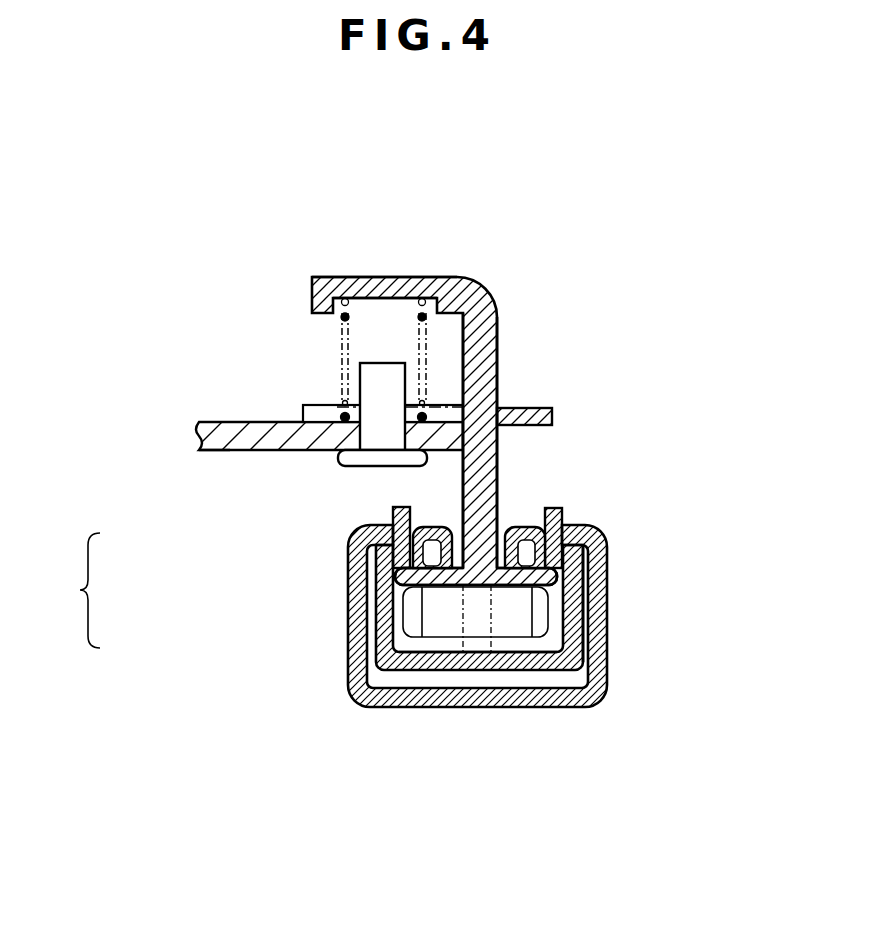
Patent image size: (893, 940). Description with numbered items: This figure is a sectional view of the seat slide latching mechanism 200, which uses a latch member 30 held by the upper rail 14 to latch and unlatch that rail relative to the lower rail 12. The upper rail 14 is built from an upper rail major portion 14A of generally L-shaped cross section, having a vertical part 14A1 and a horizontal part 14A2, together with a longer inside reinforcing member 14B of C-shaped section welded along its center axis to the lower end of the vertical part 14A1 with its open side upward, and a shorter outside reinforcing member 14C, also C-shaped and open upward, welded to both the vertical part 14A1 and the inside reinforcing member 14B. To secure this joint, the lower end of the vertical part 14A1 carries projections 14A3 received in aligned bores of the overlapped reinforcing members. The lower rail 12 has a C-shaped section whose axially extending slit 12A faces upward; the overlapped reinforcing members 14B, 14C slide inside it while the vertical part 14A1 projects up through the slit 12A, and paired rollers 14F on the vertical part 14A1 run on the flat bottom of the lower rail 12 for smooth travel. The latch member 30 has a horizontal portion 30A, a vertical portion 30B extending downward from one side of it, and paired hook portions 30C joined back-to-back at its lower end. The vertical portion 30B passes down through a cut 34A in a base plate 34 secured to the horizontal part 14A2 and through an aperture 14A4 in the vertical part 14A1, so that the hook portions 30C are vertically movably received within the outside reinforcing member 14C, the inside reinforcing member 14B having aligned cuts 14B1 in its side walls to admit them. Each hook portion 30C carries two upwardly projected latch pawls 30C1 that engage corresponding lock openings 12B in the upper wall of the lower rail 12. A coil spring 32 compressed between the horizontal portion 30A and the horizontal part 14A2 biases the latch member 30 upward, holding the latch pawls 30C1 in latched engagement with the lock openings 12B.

The seat slide latching mechanism 200 is at (441, 211).
The latch member 30 is at (479, 419).
The horizontal portion 30A is at (367, 277).
The vertical portion 30B is at (498, 332).
The hook portions 30C is at (562, 587).
The latch pawls 30C1 is at (473, 496).
The coil spring 32 is at (342, 318).
The base plate 34 is at (540, 407).
The cut 34A is at (444, 396).
The upper rail 14 is at (266, 419).
The upper rail major portion 14A is at (68, 590).
The vertical part 14A1 is at (470, 624).
The horizontal part 14A2 is at (210, 452).
The projections 14A3 is at (497, 575).
The aperture 14A4 is at (480, 606).
The inside reinforcing member 14B is at (552, 610).
The cuts 14B1 is at (588, 605).
The outside reinforcing member 14C is at (433, 670).
The rollers 14F is at (393, 677).
The lower rail 12 is at (480, 643).
The slit 12A is at (505, 552).
The lock openings 12B is at (390, 518).